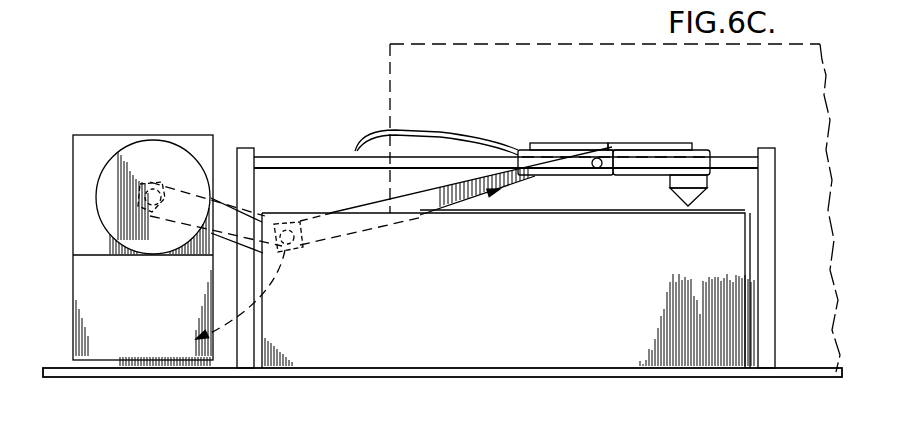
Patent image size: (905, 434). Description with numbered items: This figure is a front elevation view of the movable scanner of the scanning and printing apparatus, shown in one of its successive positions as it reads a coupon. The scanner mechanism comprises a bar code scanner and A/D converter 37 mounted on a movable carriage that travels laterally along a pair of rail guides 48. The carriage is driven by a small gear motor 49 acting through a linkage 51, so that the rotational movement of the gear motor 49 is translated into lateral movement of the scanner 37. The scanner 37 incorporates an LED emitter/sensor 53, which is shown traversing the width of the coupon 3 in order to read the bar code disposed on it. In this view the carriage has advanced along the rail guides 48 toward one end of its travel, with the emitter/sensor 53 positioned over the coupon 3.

The coupon 3 is at (570, 198).
The bar code scanner and A/D converter 37 is at (648, 143).
The rail guides 48 is at (282, 156).
The gear motor 49 is at (92, 242).
The linkage 51 is at (498, 184).
The LED emitter/sensor 53 is at (704, 187).